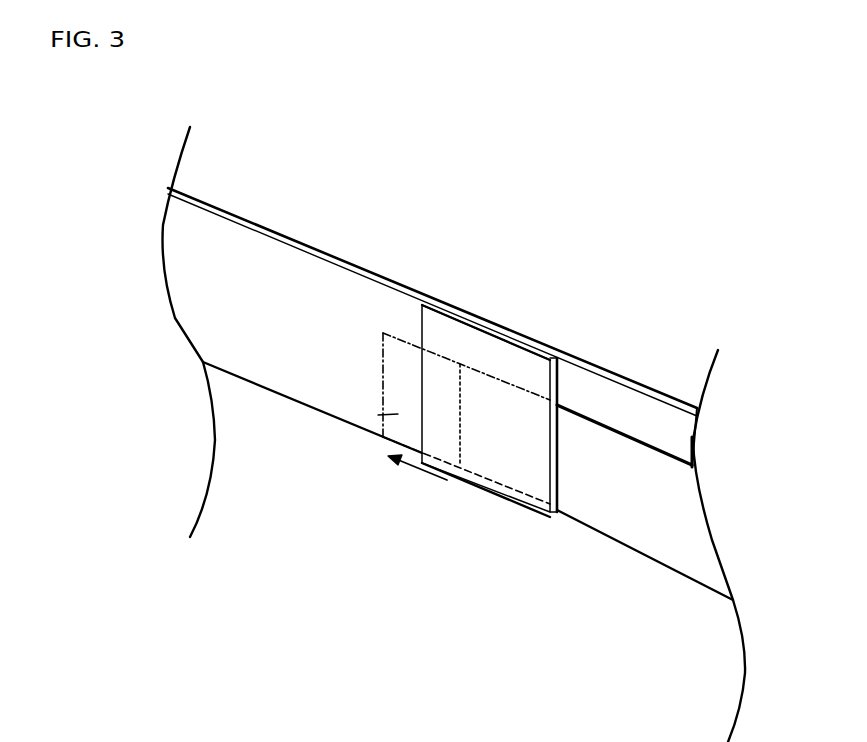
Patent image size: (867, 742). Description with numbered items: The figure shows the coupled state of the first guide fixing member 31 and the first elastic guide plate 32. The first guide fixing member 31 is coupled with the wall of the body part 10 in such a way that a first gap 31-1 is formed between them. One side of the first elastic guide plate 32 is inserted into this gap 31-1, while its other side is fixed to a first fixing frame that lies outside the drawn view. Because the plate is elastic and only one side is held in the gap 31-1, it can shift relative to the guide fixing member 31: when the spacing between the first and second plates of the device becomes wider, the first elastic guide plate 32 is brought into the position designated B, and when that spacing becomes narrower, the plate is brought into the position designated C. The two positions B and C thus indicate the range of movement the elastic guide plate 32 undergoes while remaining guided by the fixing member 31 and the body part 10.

The body part 10 is at (353, 267).
The first guide fixing member 31 is at (482, 330).
The first gap 31-1 is at (560, 484).
The first elastic guide plate 32 is at (617, 460).
The position B is at (382, 415).
The position C is at (503, 467).